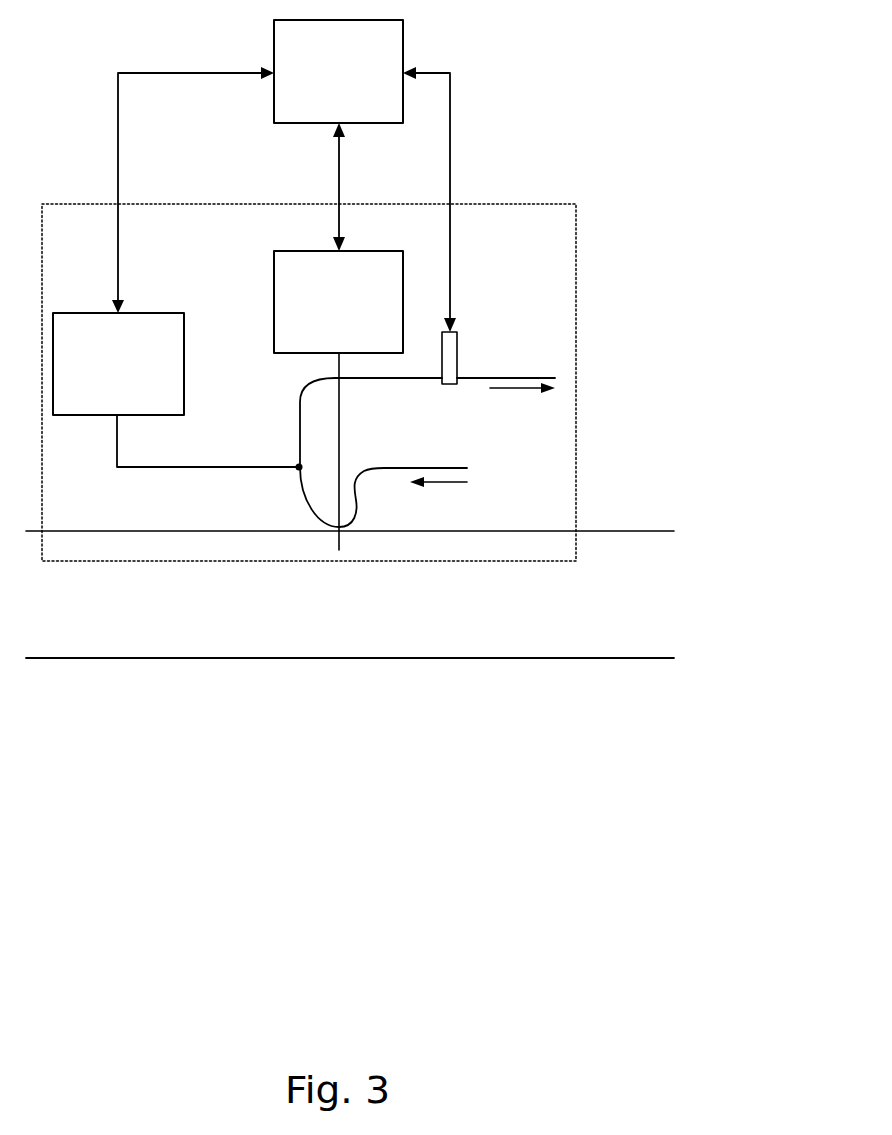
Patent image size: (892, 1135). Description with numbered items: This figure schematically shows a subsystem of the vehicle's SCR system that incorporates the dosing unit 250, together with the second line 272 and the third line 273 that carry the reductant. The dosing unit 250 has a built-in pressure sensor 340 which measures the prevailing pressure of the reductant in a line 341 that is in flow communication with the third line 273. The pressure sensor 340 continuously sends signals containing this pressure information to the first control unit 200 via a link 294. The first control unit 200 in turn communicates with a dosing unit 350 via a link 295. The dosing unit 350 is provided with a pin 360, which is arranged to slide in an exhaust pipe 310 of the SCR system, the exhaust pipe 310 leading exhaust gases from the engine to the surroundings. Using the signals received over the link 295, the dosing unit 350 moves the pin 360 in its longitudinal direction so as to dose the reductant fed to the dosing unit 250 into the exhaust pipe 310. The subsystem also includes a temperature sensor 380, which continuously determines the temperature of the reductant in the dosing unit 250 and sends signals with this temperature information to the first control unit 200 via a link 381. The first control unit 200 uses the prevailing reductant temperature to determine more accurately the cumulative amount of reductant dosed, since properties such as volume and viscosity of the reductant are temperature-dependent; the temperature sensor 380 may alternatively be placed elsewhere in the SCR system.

The first control unit 200 is at (357, 86).
The dosing unit 250 is at (576, 371).
The second line 272 is at (428, 468).
The third line 273 is at (545, 377).
The link 294 is at (118, 186).
The link 295 is at (339, 182).
The exhaust pipe 310 is at (605, 532).
The pressure sensor 340 is at (136, 377).
The line 341 is at (180, 468).
The dosing unit 350 is at (357, 310).
The pin 360 is at (339, 393).
The temperature sensor 380 is at (458, 339).
The link 381 is at (450, 128).